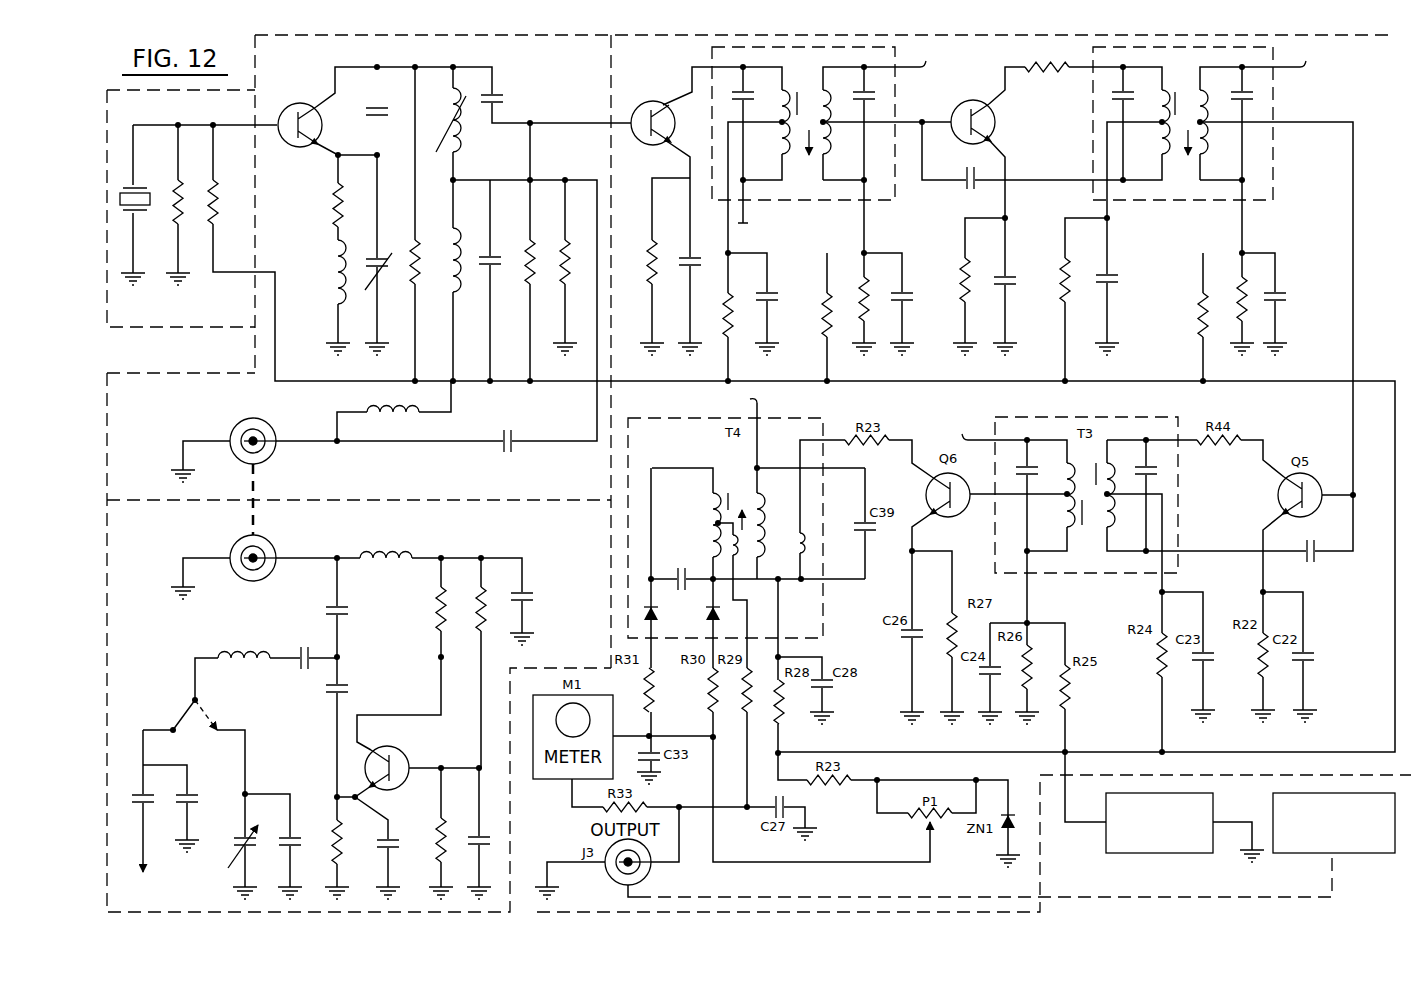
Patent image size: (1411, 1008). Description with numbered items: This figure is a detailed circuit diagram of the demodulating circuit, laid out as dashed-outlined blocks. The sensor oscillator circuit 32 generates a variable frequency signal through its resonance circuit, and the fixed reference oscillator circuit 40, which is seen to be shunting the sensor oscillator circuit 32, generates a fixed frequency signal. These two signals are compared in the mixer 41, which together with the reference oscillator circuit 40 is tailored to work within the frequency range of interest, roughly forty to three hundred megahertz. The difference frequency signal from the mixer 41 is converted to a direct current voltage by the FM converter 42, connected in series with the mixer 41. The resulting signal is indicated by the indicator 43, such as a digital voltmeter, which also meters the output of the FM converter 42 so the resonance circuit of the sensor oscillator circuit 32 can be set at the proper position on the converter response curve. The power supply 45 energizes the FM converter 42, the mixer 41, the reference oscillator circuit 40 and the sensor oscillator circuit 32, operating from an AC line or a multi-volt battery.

The fixed reference oscillator circuit 40 is at (236, 308).
The mixer 41 is at (581, 76).
The FM converter 42 is at (1385, 74).
The sensor oscillator circuit 32 is at (581, 538).
The indicator 43 is at (1363, 853).
The power supply 45 is at (1162, 853).